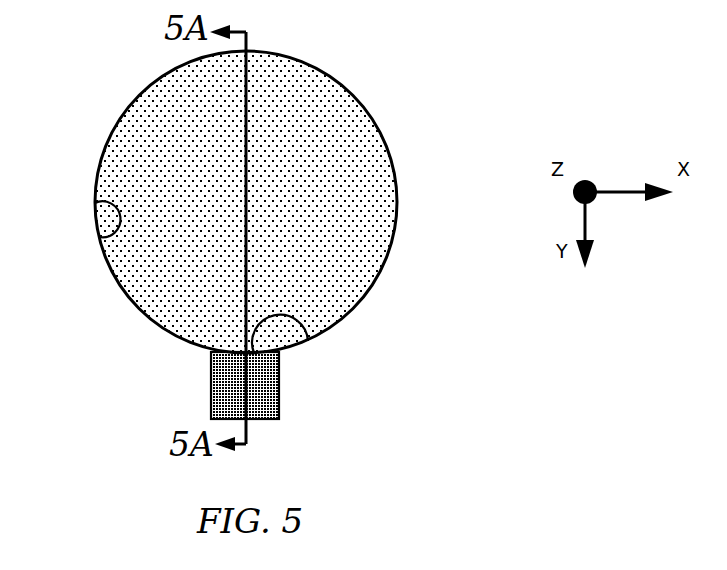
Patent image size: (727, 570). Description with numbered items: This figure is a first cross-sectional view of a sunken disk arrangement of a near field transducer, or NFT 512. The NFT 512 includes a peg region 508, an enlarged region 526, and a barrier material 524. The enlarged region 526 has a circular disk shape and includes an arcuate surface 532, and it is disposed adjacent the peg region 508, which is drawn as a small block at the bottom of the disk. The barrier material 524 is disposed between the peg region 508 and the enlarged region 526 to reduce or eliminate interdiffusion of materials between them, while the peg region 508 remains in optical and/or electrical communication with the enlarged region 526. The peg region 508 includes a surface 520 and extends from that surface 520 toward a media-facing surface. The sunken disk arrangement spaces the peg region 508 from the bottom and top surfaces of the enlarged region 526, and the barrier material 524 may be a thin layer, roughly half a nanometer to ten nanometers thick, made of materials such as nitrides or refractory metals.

The peg region 508 is at (291, 413).
The NFT 512 is at (208, 208).
The surface 520 is at (312, 338).
The barrier material 524 is at (123, 118).
The enlarged region 526 is at (212, 303).
The arcuate surface 532 is at (95, 203).